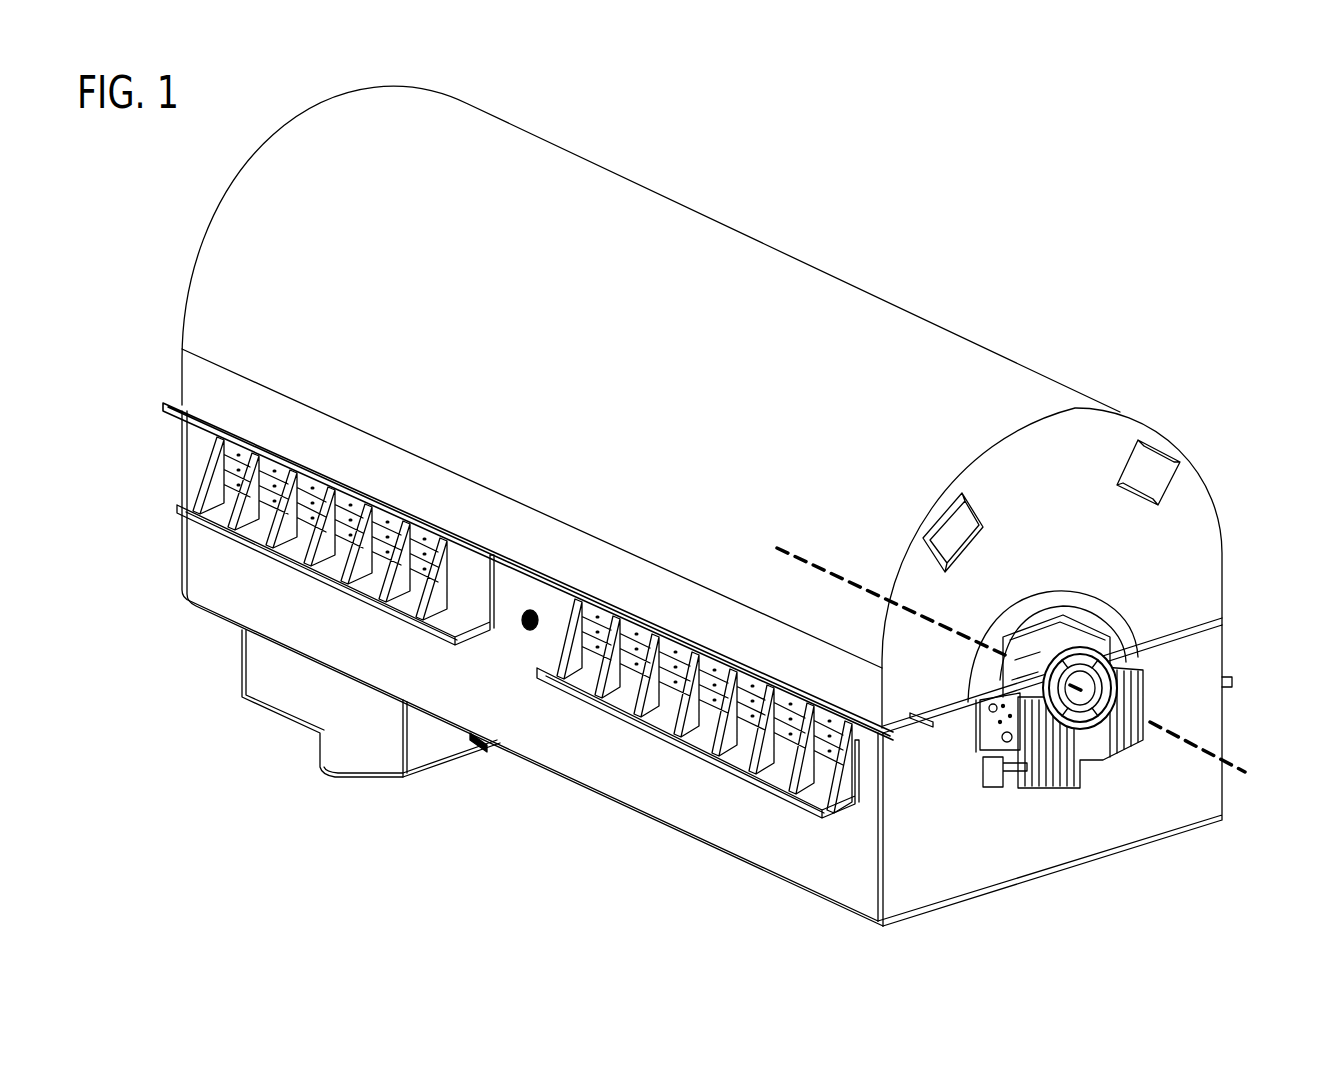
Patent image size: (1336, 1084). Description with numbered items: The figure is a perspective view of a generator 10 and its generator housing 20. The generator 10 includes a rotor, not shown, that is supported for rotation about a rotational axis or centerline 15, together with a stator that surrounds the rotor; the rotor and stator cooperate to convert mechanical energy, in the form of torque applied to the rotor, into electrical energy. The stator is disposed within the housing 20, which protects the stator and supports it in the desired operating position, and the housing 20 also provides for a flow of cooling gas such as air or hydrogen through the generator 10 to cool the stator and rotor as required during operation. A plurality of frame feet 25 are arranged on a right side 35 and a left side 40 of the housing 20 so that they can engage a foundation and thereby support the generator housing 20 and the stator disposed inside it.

The generator 10 is at (1148, 126).
The rotational axis or centerline 15 is at (826, 565).
The generator housing 20 is at (500, 163).
The frame feet 25 is at (220, 508).
The right side 35 is at (815, 862).
The left side 40 is at (1232, 775).